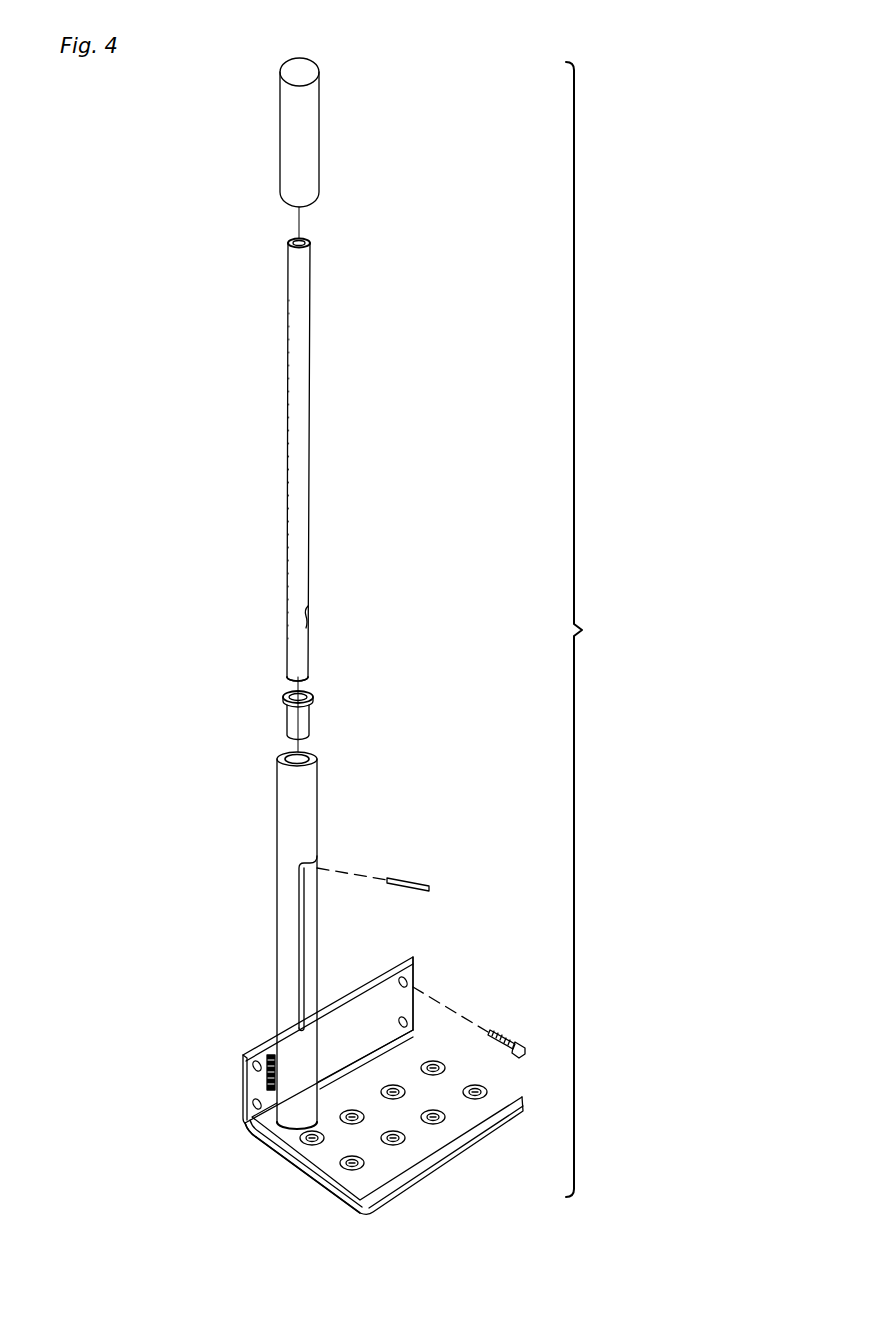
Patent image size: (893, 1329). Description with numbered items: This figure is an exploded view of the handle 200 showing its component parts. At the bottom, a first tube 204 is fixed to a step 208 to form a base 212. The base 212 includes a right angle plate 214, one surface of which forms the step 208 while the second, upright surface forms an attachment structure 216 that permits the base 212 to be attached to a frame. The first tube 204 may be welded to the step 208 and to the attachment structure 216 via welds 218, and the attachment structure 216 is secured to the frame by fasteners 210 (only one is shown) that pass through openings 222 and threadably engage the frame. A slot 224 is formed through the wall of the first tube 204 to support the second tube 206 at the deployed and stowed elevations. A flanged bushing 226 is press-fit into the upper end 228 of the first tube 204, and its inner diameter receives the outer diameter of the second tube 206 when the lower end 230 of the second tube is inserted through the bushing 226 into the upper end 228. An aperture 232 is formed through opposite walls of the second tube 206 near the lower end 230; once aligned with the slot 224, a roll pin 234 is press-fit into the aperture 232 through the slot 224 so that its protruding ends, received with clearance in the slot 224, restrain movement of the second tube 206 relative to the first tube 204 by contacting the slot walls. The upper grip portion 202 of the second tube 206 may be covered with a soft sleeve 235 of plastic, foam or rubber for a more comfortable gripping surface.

The handle 200 is at (597, 629).
The grip portion 202 is at (310, 297).
The first tube 204 is at (276, 810).
The second tube 206 is at (287, 375).
The step 208 is at (418, 1126).
The fastener 210 is at (497, 1031).
The base 212 is at (254, 1032).
The right angle plate 214 is at (325, 1172).
The attachment structure 216 is at (353, 1007).
The welds 218 is at (335, 1118).
The openings 222 is at (257, 1101).
The slot 224 is at (298, 920).
The flanged bushing 226 is at (284, 716).
The upper end 228 is at (313, 757).
The lower end 230 is at (285, 677).
The aperture 232 is at (308, 613).
The roll pin 234 is at (413, 878).
The sleeve 235 is at (318, 137).